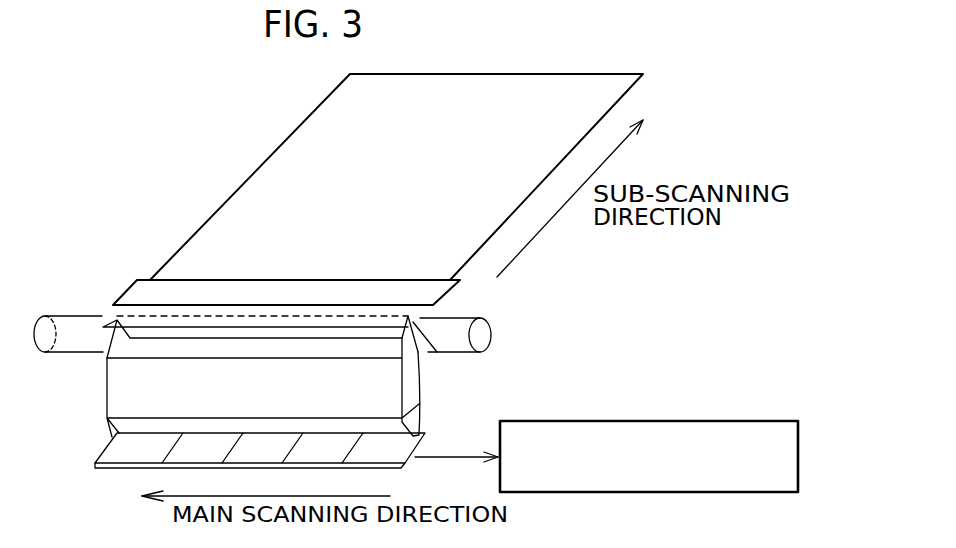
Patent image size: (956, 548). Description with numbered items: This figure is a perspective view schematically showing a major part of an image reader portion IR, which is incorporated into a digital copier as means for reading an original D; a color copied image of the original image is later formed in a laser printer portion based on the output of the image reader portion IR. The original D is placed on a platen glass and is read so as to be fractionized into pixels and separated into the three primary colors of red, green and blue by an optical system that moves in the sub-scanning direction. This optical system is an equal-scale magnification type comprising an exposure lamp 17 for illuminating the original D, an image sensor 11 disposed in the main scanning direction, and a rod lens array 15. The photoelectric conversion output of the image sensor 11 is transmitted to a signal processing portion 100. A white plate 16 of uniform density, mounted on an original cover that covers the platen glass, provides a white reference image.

The image reader portion IR is at (119, 153).
The original D is at (317, 136).
The white plate 16 is at (248, 285).
The exposure lamp 17 is at (488, 342).
The rod lens array 15 is at (410, 387).
The image sensor 11 is at (122, 470).
The signal processing portion 100 is at (628, 420).